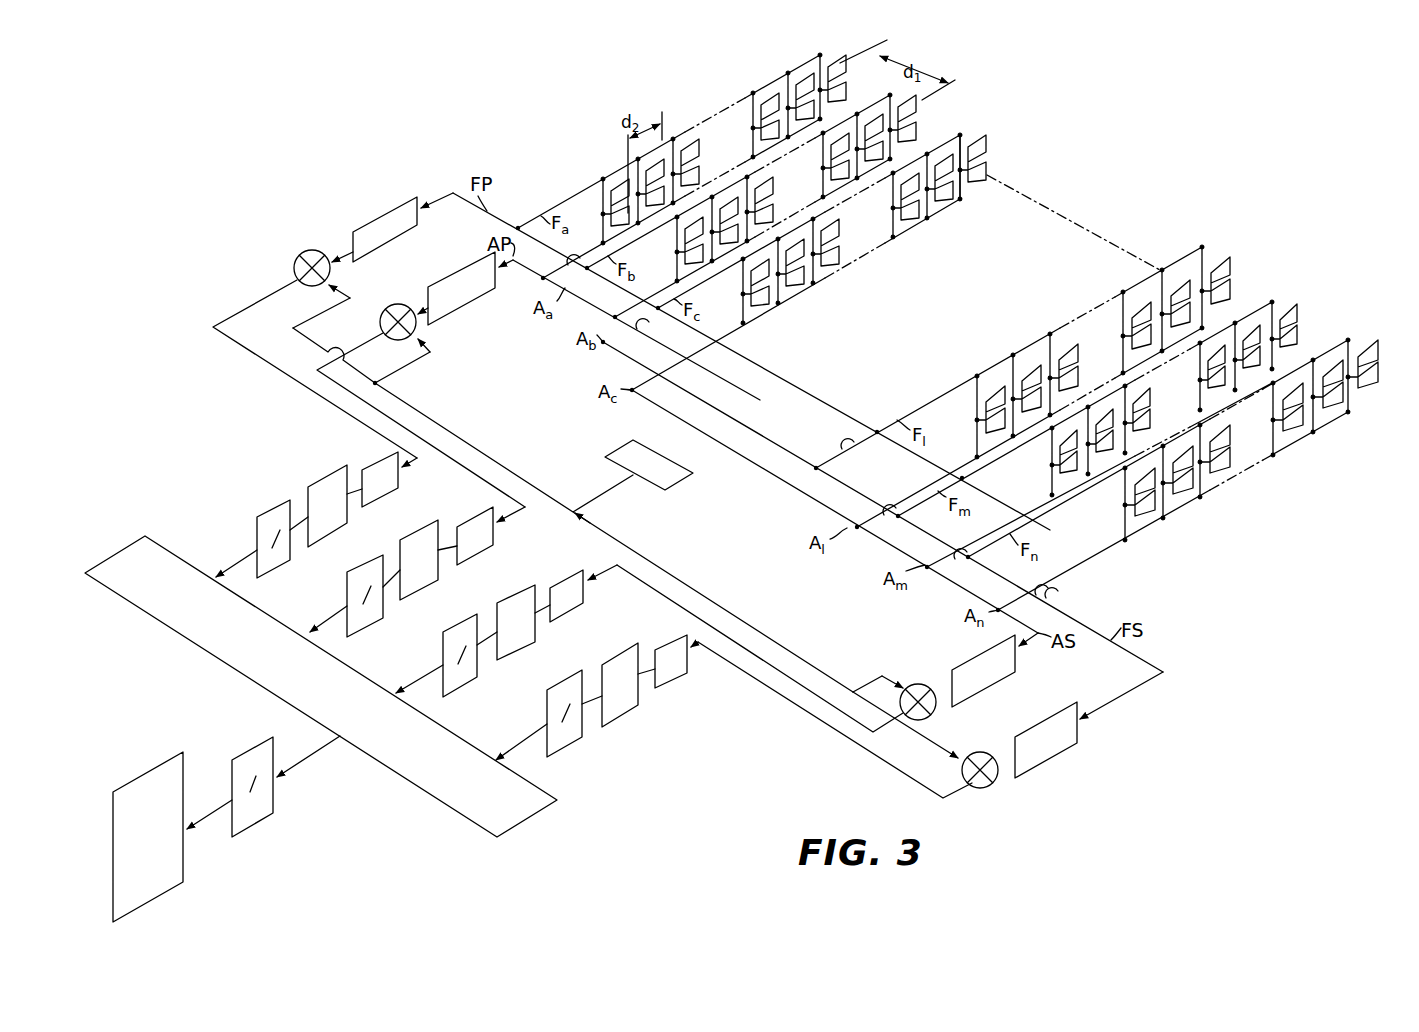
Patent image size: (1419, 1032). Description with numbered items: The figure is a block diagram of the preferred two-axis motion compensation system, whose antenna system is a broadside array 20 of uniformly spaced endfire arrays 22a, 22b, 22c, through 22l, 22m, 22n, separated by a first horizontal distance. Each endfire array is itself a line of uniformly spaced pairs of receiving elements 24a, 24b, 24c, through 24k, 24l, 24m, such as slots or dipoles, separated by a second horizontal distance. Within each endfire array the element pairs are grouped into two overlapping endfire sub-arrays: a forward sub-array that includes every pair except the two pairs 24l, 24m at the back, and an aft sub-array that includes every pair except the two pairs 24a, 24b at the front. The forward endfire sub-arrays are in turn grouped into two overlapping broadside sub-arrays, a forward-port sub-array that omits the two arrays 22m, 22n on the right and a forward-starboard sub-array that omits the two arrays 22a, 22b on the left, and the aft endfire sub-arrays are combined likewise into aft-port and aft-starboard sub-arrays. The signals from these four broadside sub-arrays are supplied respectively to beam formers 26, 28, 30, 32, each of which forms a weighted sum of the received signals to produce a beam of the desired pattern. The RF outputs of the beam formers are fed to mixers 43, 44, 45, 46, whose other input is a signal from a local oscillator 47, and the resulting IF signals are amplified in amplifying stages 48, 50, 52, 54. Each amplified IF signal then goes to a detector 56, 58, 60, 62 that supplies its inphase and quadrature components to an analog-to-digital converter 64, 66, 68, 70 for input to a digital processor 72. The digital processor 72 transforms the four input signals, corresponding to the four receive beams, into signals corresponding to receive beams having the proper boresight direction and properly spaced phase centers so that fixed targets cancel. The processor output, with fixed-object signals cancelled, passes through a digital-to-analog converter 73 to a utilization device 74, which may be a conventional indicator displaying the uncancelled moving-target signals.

The broadside array 20 is at (1134, 158).
The endfire array 22a is at (833, 63).
The endfire array 22b is at (916, 120).
The endfire array 22c is at (986, 163).
The endfire array 22l is at (1224, 293).
The endfire array 22m is at (1302, 336).
The endfire array 22n is at (1376, 374).
The pair of receiving elements 24a is at (963, 192).
The pair of receiving elements 24b is at (946, 215).
The pair of receiving elements 24c is at (905, 235).
The pair of receiving elements 24k is at (833, 263).
The pair of receiving elements 24l is at (795, 288).
The pair of receiving elements 24m is at (759, 318).
The beam former 26 is at (394, 204).
The beam former 28 is at (483, 298).
The beam former 30 is at (990, 687).
The beam former 32 is at (1065, 748).
The mixer 43 is at (312, 249).
The mixer 44 is at (423, 338).
The mixer 45 is at (929, 715).
The mixer 46 is at (992, 787).
The local oscillator 47 is at (693, 474).
The amplifying stage 48 is at (398, 488).
The amplifying stage 50 is at (493, 545).
The amplifying stage 52 is at (583, 603).
The amplifying stage 54 is at (687, 673).
The detector 56 is at (347, 523).
The detector 58 is at (438, 580).
The detector 60 is at (535, 642).
The detector 62 is at (634, 705).
The analog-to-digital converter 64 is at (289, 560).
The analog-to-digital converter 66 is at (382, 620).
The analog-to-digital converter 68 is at (477, 677).
The analog-to-digital converter 70 is at (582, 737).
The digital processor 72 is at (557, 800).
The digital-to-analog converter 73 is at (273, 812).
The utilization device 74 is at (183, 882).